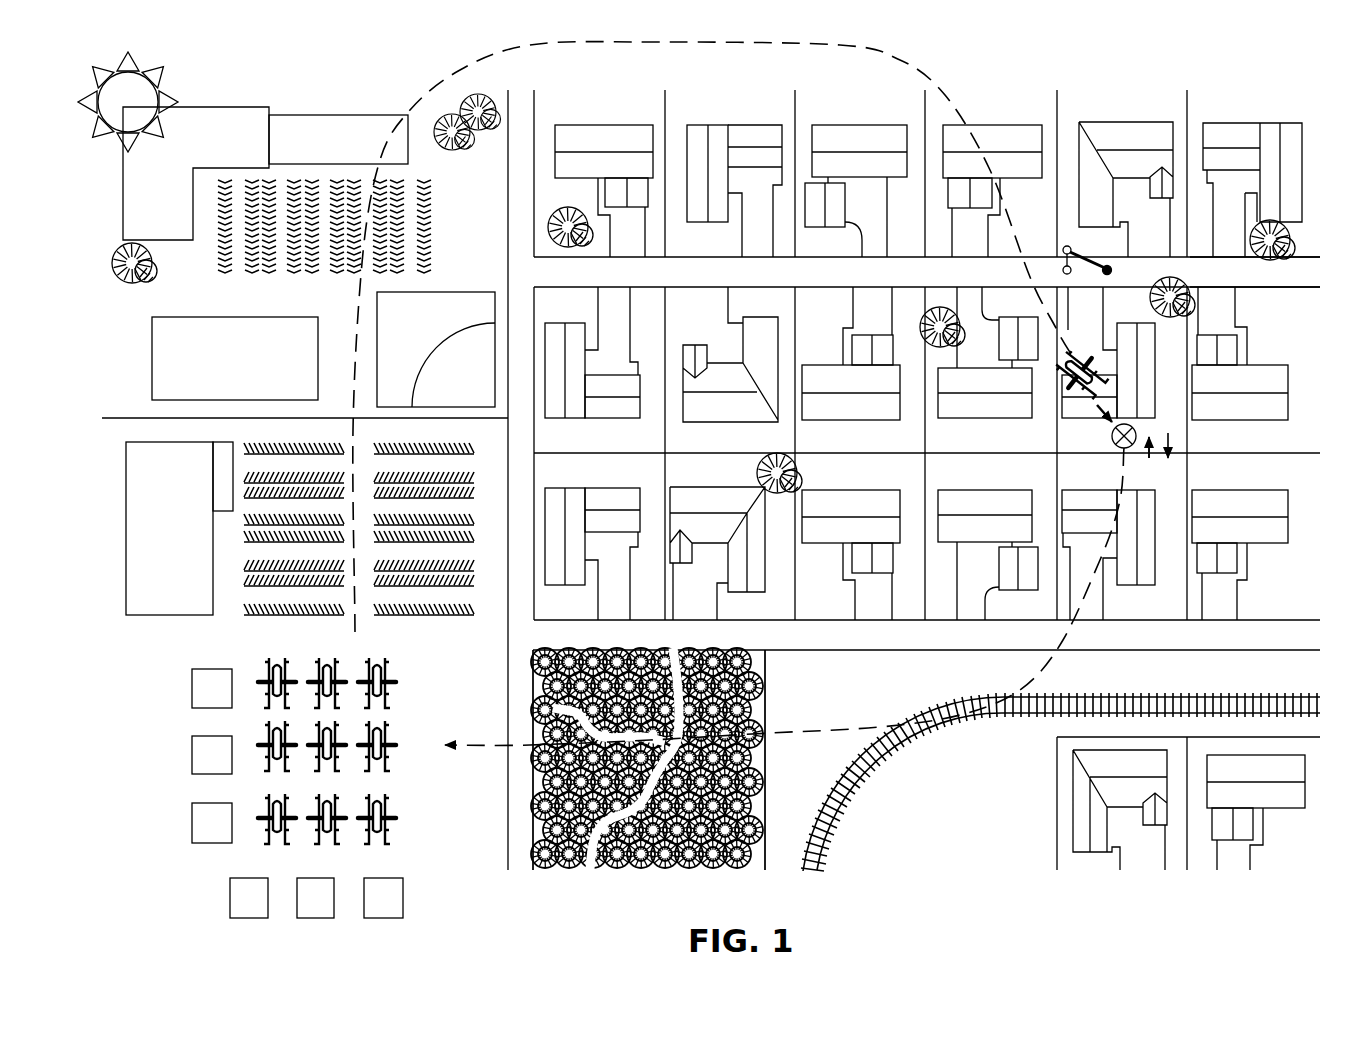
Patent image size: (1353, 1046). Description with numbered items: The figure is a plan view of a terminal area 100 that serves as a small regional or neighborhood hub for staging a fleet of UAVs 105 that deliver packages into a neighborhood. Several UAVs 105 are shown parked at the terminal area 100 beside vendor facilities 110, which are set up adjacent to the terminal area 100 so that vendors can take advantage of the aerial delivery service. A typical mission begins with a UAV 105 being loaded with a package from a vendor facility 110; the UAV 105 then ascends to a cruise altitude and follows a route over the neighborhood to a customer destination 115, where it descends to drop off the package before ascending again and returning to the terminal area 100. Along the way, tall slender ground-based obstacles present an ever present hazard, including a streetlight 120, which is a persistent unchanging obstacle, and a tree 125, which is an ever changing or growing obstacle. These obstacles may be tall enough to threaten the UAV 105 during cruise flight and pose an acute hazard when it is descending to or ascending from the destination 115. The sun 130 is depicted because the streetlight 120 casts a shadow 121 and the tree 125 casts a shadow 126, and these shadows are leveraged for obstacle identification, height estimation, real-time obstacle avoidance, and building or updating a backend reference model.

The terminal area 100 is at (175, 893).
The UAV 105 is at (396, 684).
The vendor facility 110 is at (192, 752).
The customer destination 115 is at (1113, 444).
The streetlight 120 is at (1059, 235).
The shadow 121 is at (1108, 252).
The tree 125 is at (1284, 213).
The shadow 126 is at (1298, 274).
The sun 130 is at (146, 113).